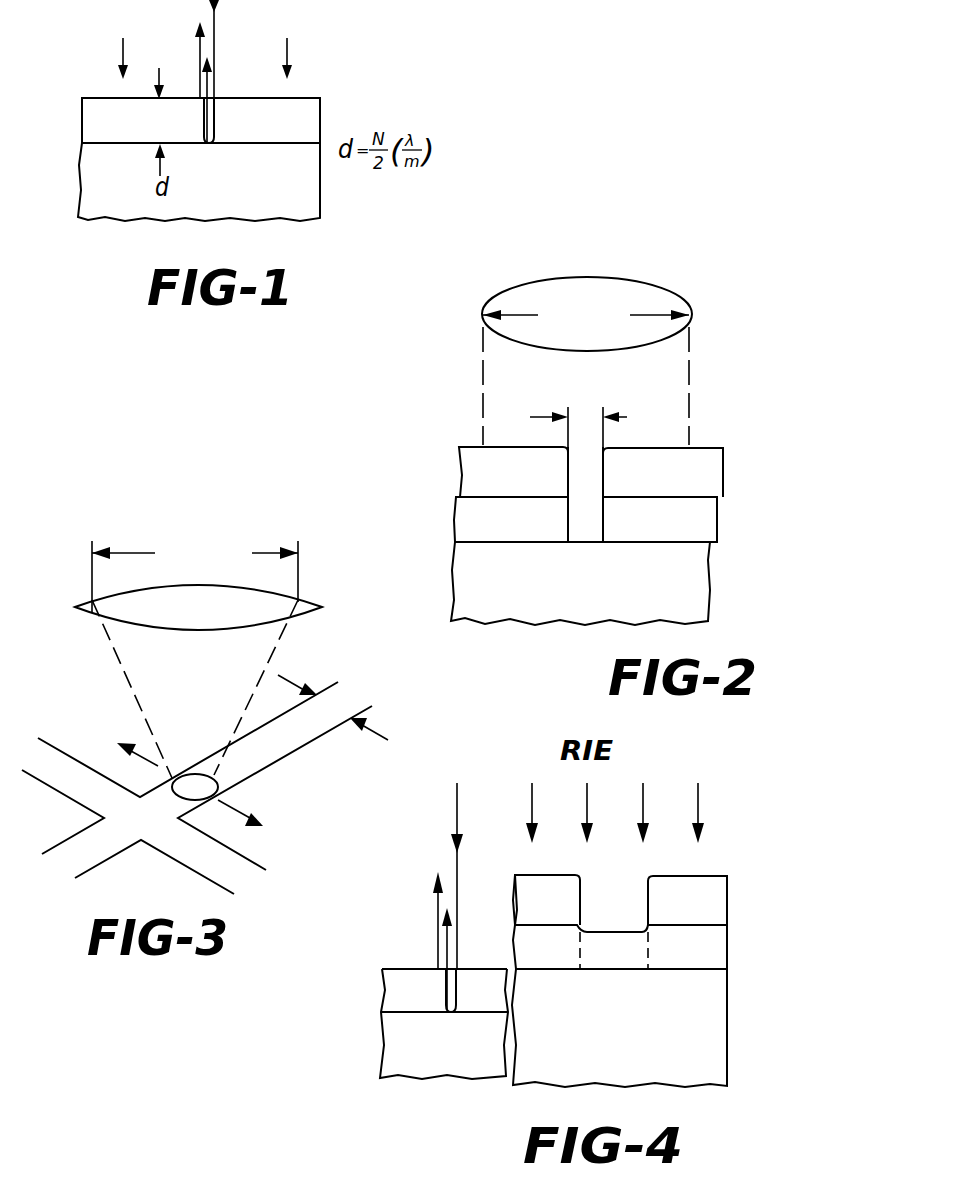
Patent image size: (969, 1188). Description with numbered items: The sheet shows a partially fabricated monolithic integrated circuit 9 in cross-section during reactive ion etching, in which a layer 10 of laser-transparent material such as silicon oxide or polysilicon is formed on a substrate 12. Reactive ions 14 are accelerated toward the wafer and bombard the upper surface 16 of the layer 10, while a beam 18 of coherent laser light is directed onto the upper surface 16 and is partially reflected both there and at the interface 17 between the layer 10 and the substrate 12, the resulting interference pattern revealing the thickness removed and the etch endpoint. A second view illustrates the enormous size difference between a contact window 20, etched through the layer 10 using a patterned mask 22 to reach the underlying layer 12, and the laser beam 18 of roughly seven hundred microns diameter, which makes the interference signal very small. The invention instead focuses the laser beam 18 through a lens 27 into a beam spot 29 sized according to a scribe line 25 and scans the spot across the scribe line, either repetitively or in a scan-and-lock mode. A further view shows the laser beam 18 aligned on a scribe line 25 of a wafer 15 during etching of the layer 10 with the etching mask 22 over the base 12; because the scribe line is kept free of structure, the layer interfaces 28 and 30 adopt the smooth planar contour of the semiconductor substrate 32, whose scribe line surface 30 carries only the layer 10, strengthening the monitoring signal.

In FIG. 1, the partially fabricated monolithic integrated circuit 9 is at (102, 78).
In FIG. 1, the layer 10 is at (115, 130).
In FIG. 2, the layer 10 is at (661, 537).
In FIG. 4, the layer 10 is at (417, 1008).
In FIG. 1, the substrate 12 is at (273, 192).
In FIG. 2, the substrate 12 is at (596, 602).
In FIG. 4, the substrate 12 is at (619, 981).
In FIG. 1, the reactive ions 14 is at (127, 53).
In FIG. 4, the reactive ions 14 is at (587, 800).
In FIG. 4, the wafer 15 is at (505, 850).
In FIG. 1, the upper surface 16 is at (302, 98).
In FIG. 1, the interface 17 is at (307, 143).
In FIG. 1, the laser beam 18 is at (216, 18).
In FIG. 2, the laser beam 18 is at (689, 385).
In FIG. 3, the laser beam 18 is at (92, 560).
In FIG. 4, the laser beam 18 is at (457, 810).
In FIG. 2, the contact window 20 is at (577, 522).
In FIG. 4, the contact window 20 is at (583, 929).
In FIG. 2, the patterned mask 22 is at (665, 490).
In FIG. 4, the patterned mask 22 is at (692, 918).
In FIG. 3, the scribe line 25 is at (154, 870).
In FIG. 4, the scribe line 25 is at (366, 980).
In FIG. 3, the lens 27 is at (92, 621).
In FIG. 4, the layer interface 28 is at (389, 968).
In FIG. 3, the beam spot 29 is at (197, 774).
In FIG. 4, the scribe line surface 30 is at (385, 1008).
In FIG. 4, the semiconductor substrate 32 is at (415, 1063).